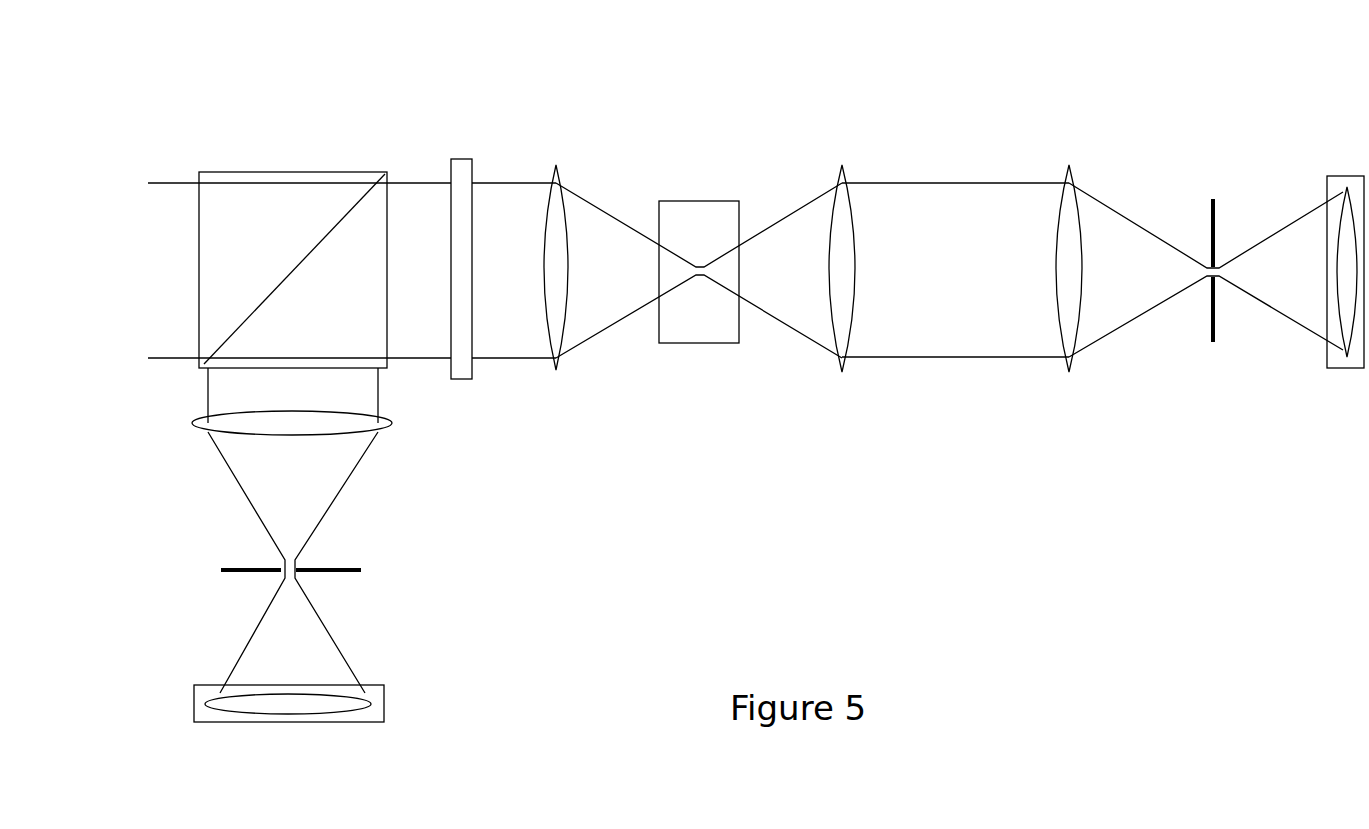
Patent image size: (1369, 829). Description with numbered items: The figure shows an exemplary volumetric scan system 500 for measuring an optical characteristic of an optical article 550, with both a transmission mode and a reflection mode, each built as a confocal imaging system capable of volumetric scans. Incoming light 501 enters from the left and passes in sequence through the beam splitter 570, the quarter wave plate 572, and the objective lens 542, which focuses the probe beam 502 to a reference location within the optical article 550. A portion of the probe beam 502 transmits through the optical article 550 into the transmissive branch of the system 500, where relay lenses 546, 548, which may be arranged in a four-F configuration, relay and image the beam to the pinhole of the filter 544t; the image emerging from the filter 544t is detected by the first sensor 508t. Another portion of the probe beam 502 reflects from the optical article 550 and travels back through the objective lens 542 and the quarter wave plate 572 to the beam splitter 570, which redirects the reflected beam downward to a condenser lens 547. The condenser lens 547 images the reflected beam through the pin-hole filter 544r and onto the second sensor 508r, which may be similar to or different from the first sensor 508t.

The volumetric scan system 500 is at (755, 512).
The light 501 is at (116, 270).
The probe beam 502 is at (612, 355).
The beam splitter 570 is at (303, 173).
The quarter wave plate 572 is at (465, 160).
The objective lens 542 is at (556, 167).
The optical article 550 is at (715, 217).
The relay lens 546 is at (842, 170).
The relay lens 548 is at (1070, 168).
The filter 544t is at (1211, 317).
The first sensor 508t is at (1353, 185).
The condenser lens 547 is at (387, 423).
The pin-hole filter 544r is at (345, 571).
The second sensor 508r is at (377, 715).